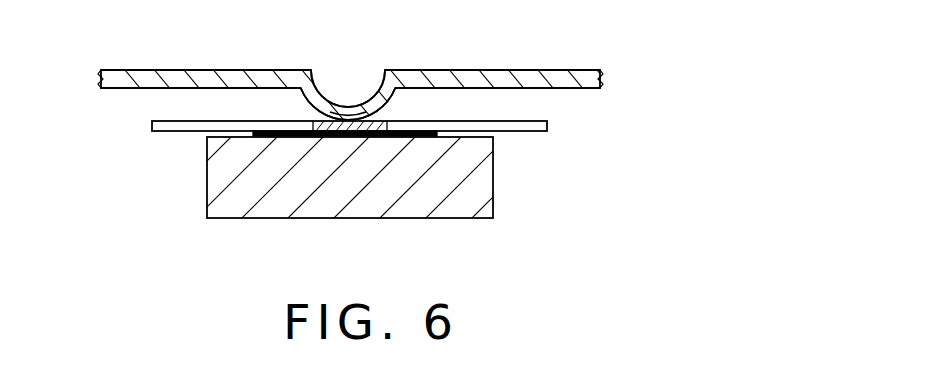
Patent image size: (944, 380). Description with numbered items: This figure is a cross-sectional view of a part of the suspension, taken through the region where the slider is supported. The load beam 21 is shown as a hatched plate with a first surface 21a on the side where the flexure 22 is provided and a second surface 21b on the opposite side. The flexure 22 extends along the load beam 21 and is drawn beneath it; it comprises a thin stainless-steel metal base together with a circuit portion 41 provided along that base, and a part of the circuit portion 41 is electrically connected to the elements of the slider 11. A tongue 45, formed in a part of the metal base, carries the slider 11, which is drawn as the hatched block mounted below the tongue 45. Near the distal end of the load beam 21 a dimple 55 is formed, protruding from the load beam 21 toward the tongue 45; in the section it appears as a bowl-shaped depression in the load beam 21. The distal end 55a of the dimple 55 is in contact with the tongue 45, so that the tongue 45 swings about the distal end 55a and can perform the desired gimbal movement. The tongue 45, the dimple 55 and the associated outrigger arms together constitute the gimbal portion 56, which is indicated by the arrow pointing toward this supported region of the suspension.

The slider 11 is at (268, 205).
The load beam 21 is at (497, 82).
The first surface 21a is at (566, 88).
The second surface 21b is at (578, 70).
The flexure 22 is at (130, 123).
The circuit portion 41 is at (287, 130).
The tongue 45 is at (170, 133).
The dimple 55 is at (350, 104).
The distal end of the dimple 55a is at (350, 125).
The gimbal portion 56 is at (349, 146).